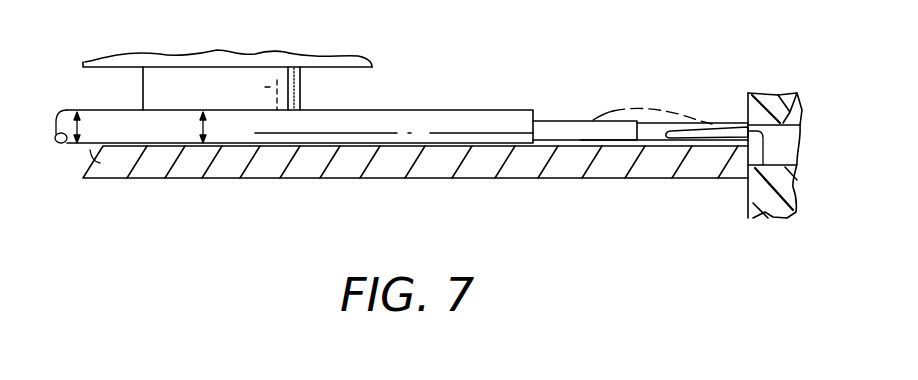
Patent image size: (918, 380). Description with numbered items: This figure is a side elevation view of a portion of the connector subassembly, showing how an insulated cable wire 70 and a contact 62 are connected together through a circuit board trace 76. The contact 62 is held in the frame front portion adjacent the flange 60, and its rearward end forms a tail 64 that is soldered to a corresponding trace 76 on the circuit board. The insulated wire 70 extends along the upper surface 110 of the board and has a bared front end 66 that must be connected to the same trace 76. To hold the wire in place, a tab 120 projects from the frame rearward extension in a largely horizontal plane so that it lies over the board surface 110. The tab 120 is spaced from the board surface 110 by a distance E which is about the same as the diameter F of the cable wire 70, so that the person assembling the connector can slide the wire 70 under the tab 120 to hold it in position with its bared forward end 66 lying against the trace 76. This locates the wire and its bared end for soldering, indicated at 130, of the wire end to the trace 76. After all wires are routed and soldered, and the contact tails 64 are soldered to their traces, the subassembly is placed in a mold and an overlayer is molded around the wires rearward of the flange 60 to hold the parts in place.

The flange 60 is at (748, 198).
The contact 62 is at (800, 130).
The tail 64 is at (730, 120).
The bared front end 66 is at (570, 120).
The insulated cable wire 70 is at (453, 110).
The trace 76 is at (657, 128).
The upper surface of the board 110 is at (126, 150).
The tab 120 is at (303, 90).
The soldering 130 is at (613, 110).
The distance E is at (190, 133).
The diameter F is at (58, 145).